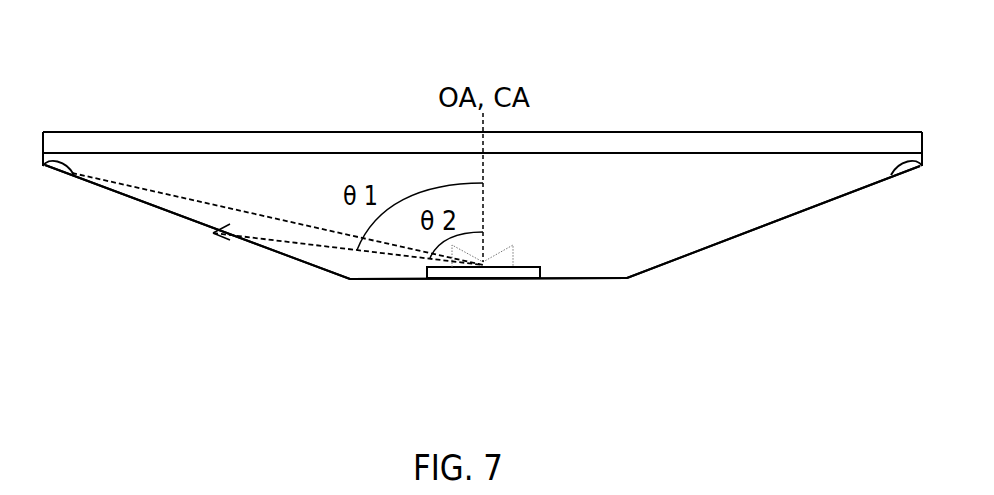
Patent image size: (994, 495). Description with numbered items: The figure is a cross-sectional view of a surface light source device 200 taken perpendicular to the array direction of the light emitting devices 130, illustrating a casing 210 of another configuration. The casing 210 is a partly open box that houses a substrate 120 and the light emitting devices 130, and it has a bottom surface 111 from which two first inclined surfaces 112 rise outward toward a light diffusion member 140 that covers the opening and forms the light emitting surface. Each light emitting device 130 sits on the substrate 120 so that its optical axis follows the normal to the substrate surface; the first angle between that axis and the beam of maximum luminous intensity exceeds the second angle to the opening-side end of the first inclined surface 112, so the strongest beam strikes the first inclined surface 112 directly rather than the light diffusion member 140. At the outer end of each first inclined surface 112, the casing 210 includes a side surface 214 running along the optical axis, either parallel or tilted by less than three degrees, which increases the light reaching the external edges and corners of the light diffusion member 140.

The surface light source device 200 is at (897, 68).
The light diffusion member 140 is at (167, 147).
The casing 210 is at (652, 268).
The side surface 214 is at (70, 177).
The first inclined surface 112 is at (185, 220).
The bottom surface 111 is at (366, 278).
The substrate 120 is at (458, 272).
The light emitting device 130 is at (500, 258).